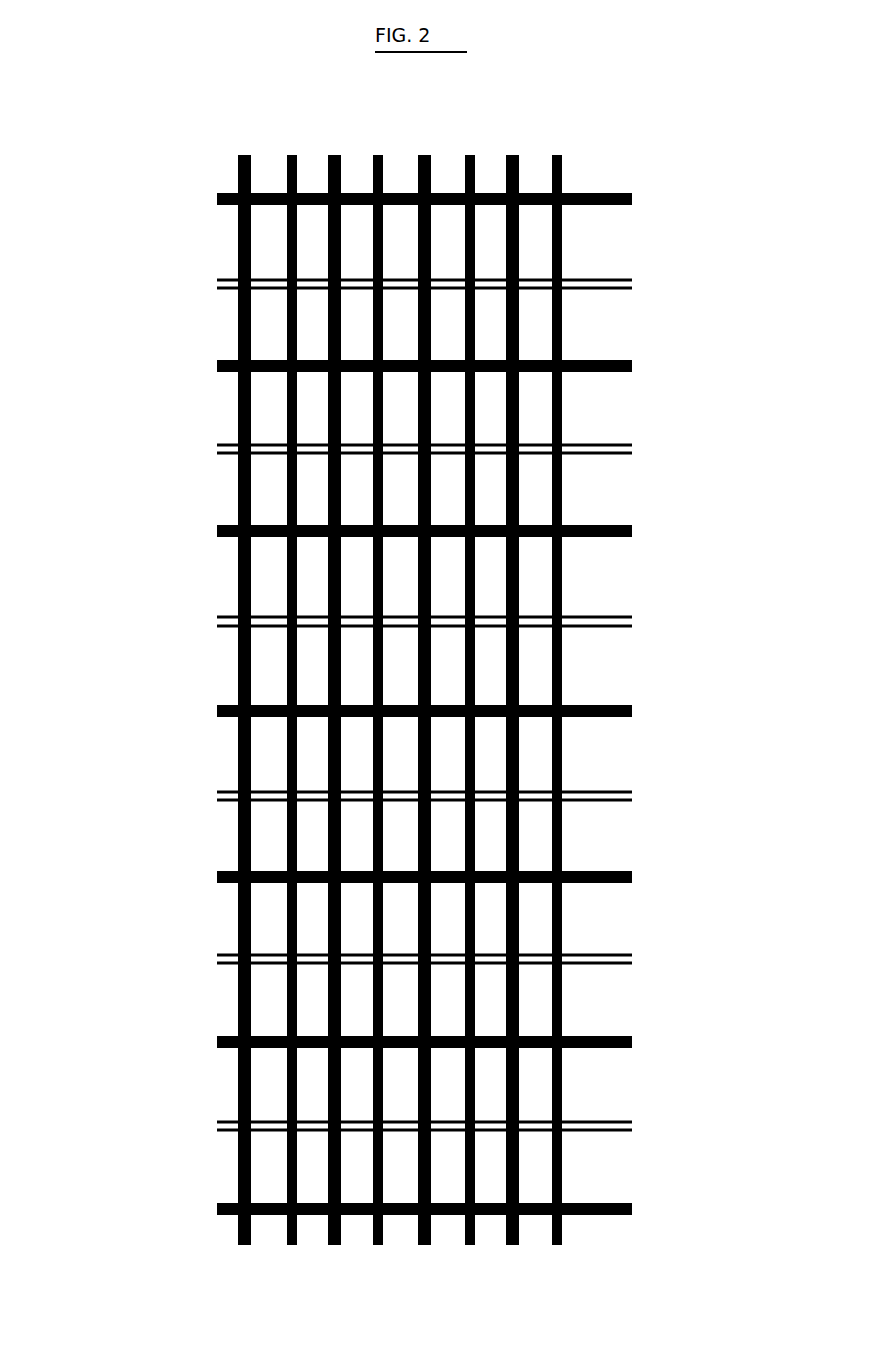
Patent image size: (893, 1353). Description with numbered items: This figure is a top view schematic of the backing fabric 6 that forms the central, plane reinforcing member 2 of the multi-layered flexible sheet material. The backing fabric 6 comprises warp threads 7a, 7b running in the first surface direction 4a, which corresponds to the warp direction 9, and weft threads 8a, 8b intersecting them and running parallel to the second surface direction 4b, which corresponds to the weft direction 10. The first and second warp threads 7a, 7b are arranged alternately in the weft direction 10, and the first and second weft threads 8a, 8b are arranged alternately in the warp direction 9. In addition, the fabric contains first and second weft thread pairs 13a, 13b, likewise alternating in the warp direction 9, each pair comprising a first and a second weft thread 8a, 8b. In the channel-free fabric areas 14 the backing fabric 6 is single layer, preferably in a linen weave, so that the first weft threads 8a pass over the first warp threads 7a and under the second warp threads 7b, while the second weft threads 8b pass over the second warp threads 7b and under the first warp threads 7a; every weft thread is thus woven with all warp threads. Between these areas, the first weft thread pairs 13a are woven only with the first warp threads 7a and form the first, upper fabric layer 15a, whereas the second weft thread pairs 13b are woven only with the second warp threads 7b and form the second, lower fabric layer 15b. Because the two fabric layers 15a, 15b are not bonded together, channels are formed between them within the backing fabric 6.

The reinforcing member 2 is at (405, 649).
The backing fabric 6 is at (302, 133).
The first surface direction 4a is at (692, 85).
The warp direction 9 is at (757, 103).
The second surface direction 4b is at (745, 167).
The weft direction 10 is at (713, 137).
The first warp thread 7a is at (218, 198).
The second warp thread 7b is at (218, 282).
The first weft thread 8a is at (245, 392).
The second weft thread 8b is at (292, 430).
The first weft thread pair 13a is at (130, 363).
The second weft thread pair 13b is at (153, 542).
The channel-free fabric area 14 is at (625, 185).
The first fabric layer 15a is at (295, 738).
The second fabric layer 15b is at (382, 817).